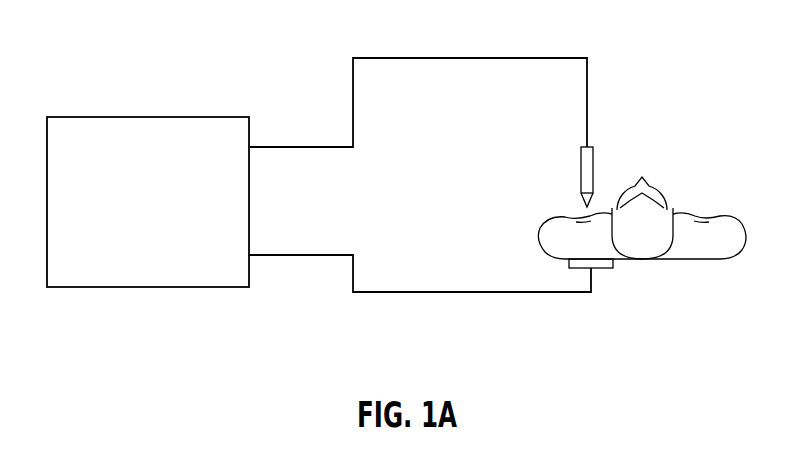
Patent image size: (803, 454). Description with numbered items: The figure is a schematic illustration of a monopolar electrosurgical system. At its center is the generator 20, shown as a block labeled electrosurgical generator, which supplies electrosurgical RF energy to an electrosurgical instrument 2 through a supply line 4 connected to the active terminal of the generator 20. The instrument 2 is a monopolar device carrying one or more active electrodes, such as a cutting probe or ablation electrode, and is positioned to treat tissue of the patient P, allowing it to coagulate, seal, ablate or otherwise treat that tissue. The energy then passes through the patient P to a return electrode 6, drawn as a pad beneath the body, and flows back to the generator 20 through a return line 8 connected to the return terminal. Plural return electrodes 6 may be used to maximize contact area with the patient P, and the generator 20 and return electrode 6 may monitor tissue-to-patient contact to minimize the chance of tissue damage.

The generator 20 is at (82, 116).
The supply line 4 is at (470, 57).
The return line 8 is at (486, 293).
The electrosurgical instrument 2 is at (580, 175).
The return electrode 6 is at (605, 270).
The patient P is at (712, 206).